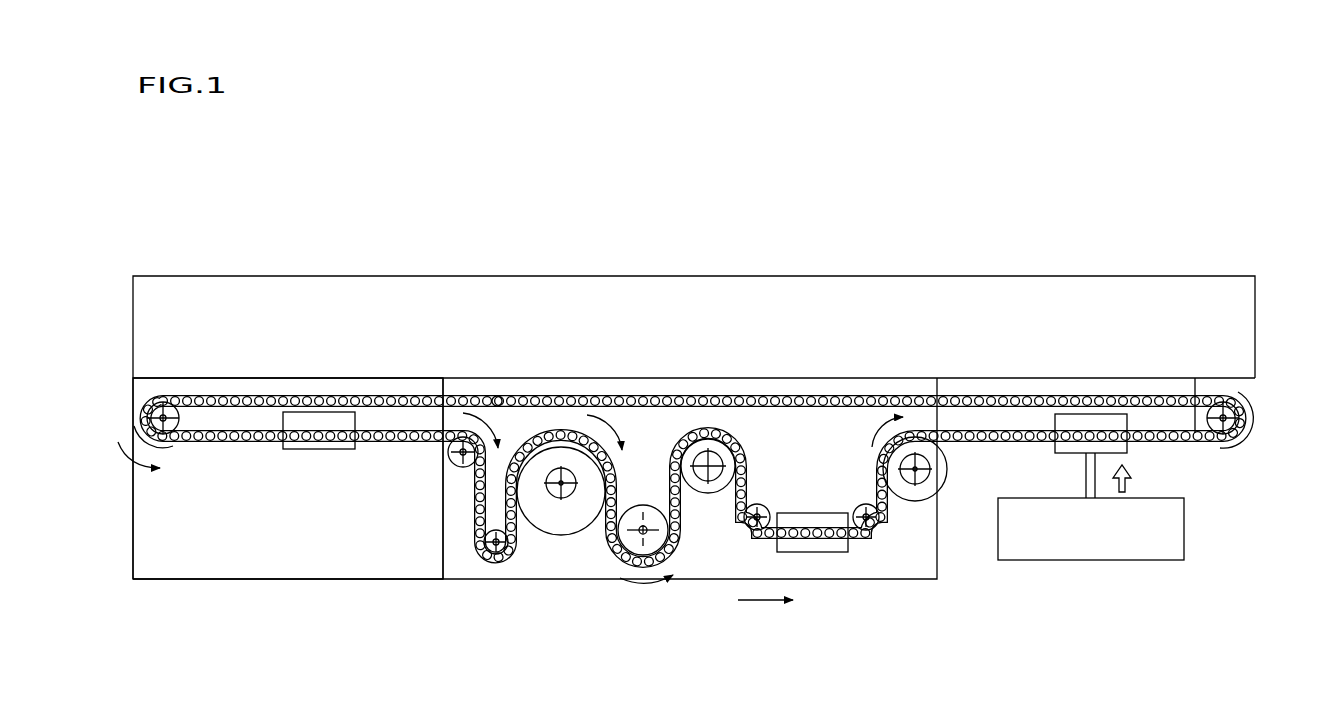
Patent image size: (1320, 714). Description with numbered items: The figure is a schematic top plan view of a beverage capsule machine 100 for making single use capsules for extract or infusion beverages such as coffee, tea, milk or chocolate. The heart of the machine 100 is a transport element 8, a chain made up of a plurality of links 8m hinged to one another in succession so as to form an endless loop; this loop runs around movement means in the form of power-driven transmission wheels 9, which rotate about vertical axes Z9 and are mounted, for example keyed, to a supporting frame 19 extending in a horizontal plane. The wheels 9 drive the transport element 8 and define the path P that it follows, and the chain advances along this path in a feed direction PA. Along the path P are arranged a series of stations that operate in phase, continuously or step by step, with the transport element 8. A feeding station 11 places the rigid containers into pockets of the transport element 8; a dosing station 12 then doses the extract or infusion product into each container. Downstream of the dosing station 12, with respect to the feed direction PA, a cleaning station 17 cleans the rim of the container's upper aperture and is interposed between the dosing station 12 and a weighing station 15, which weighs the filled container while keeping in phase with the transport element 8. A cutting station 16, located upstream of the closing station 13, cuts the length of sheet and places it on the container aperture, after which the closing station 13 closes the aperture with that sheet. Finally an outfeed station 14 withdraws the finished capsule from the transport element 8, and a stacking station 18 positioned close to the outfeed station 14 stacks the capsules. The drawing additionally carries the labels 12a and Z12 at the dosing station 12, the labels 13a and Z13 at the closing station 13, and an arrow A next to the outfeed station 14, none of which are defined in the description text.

The machine 100 is at (764, 240).
The transport element 8 is at (833, 492).
The links 8m is at (497, 397).
The power-driven transmission wheels 9 is at (173, 408).
The axes Z9 is at (160, 414).
The feeding station 11 is at (283, 453).
The dosing station 12 is at (568, 540).
The hub of drive wheel 12a is at (550, 500).
The axis of drive wheel Z12 is at (556, 470).
The closing station 13 is at (948, 494).
The hub of deflection wheel 13a is at (912, 486).
The axis of deflection wheel Z13 is at (918, 466).
The outfeed station 14 is at (1092, 420).
The weighing station 15 is at (704, 415).
The cutting station 16 is at (830, 555).
The cleaning station 17 is at (645, 504).
The stacking station 18 is at (1088, 563).
The supporting frame 19 is at (186, 543).
The path P is at (463, 402).
The feed direction PA is at (765, 620).
The adjustment direction A is at (1134, 478).